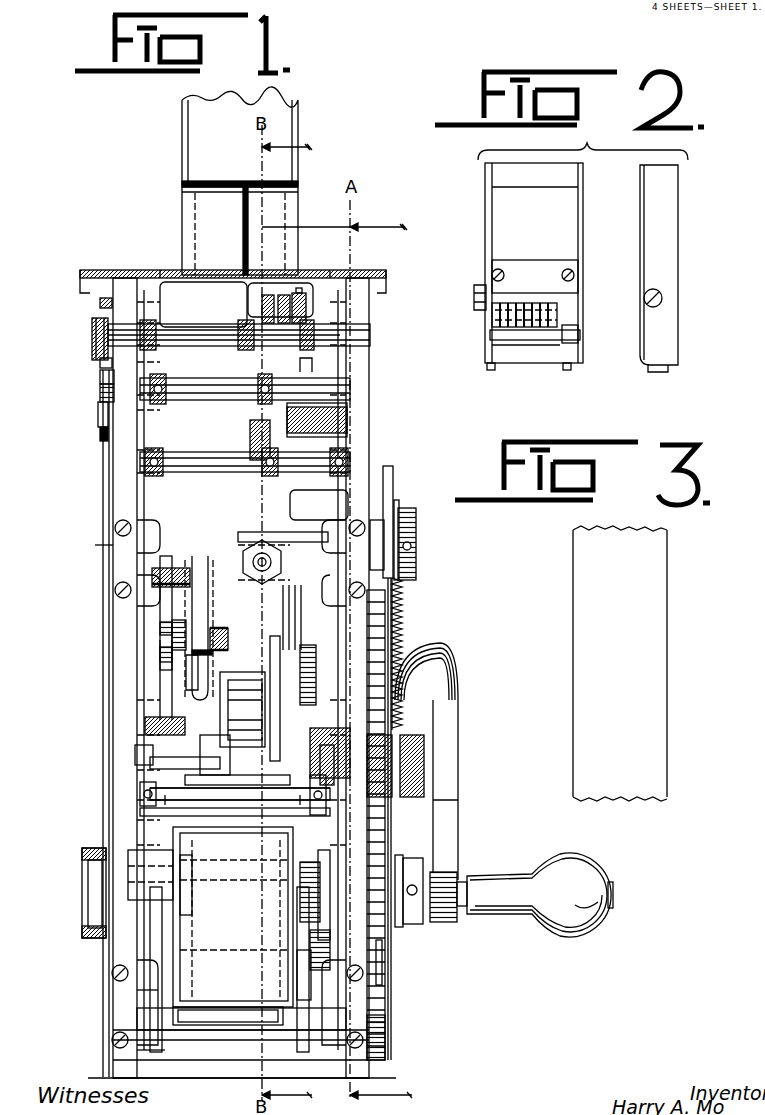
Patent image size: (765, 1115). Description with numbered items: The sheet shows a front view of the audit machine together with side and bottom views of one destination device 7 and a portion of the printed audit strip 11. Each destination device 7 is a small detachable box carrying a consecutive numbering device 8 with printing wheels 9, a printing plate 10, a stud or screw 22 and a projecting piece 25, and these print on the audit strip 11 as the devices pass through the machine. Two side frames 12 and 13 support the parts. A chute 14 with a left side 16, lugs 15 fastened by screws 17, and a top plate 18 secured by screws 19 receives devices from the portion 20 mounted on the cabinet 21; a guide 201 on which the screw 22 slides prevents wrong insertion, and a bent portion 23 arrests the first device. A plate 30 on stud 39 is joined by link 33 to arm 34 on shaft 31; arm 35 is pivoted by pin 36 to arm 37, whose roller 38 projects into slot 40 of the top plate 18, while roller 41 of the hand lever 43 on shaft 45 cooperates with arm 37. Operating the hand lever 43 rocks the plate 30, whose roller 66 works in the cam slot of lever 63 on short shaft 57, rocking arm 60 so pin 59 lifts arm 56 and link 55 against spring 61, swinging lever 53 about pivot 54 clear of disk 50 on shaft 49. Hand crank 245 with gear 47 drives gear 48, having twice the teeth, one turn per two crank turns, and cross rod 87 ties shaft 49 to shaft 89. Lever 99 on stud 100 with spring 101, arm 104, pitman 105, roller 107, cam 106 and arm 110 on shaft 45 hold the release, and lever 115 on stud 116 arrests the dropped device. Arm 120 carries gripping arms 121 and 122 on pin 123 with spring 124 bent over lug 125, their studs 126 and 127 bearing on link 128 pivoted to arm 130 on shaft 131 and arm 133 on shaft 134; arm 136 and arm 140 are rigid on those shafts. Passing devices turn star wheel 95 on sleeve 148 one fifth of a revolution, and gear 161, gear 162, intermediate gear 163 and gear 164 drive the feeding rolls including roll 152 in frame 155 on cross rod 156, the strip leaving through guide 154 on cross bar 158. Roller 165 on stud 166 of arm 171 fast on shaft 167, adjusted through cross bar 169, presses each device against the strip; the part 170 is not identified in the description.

In FIG. 2, the destination device 7 is at (553, 228).
In FIG. 2, the consecutive numbering device 8 is at (490, 316).
In FIG. 2, the printing wheels 9 is at (492, 324).
In FIG. 2, the printing plate 10 is at (573, 282).
In FIG. 3, the audit strip 11 is at (662, 678).
In FIG. 1, the side frame 12 is at (110, 665).
In FIG. 1, the side frame 13 is at (365, 305).
In FIG. 1, the chute 14 is at (205, 985).
In FIG. 1, the lugs 15 is at (105, 374).
In FIG. 1, the left hand side of chute 16 is at (192, 870).
In FIG. 1, the screws 17 is at (90, 875).
In FIG. 1, the top plate 18 is at (150, 815).
In FIG. 1, the screws 19 is at (162, 272).
In FIG. 1, the chute portion outside machine 20 is at (268, 200).
In FIG. 1, the cabinet 21 is at (365, 274).
In FIG. 2, the stud or screw 22 is at (478, 290).
In FIG. 1, the bent portion 23 is at (240, 536).
In FIG. 2, the projecting pieces 25 is at (568, 372).
In FIG. 1, the plate 30 is at (298, 356).
In FIG. 1, the shaft 31 is at (135, 752).
In FIG. 1, the link 33 is at (388, 606).
In FIG. 1, the arm 34 is at (288, 780).
In FIG. 1, the arm 35 is at (300, 272).
In FIG. 1, the pin 36 is at (292, 272).
In FIG. 1, the arm 37 is at (246, 306).
In FIG. 1, the roller 38 is at (243, 560).
In FIG. 1, the stud 39 is at (334, 446).
In FIG. 1, the slot 40 is at (248, 472).
In FIG. 1, the roller 41 is at (250, 432).
In FIG. 1, the hand lever 43 is at (243, 242).
In FIG. 1, the shaft 45 is at (186, 330).
In FIG. 1, the gear 47 is at (392, 650).
In FIG. 1, the gear 48 is at (385, 1025).
In FIG. 1, the shaft 49 is at (438, 920).
In FIG. 1, the disk 50 is at (402, 955).
In FIG. 1, the lever 53 is at (398, 938).
In FIG. 1, the pivot 54 is at (424, 772).
In FIG. 1, the link 55 is at (400, 690).
In FIG. 1, the arm 56 is at (390, 468).
In FIG. 1, the short shaft 57 is at (414, 548).
In FIG. 1, the pin 59 is at (397, 500).
In FIG. 1, the arm 60 is at (402, 508).
In FIG. 1, the spring 61 is at (397, 618).
In FIG. 1, the lever 63 is at (300, 522).
In FIG. 1, the roller 66 is at (305, 366).
In FIG. 1, the cross rod 87 is at (310, 966).
In FIG. 1, the shaft 89 is at (88, 900).
In FIG. 1, the star wheel 95 is at (270, 656).
In FIG. 1, the lever 99 is at (97, 410).
In FIG. 1, the stud 100 is at (98, 390).
In FIG. 1, the spring 101 is at (100, 303).
In FIG. 1, the arm 104 is at (98, 428).
In FIG. 1, the pitman 105 is at (102, 462).
In FIG. 1, the open cam 106 is at (86, 932).
In FIG. 1, the roller 107 is at (82, 853).
In FIG. 1, the arm 110 is at (98, 357).
In FIG. 1, the lever 115 is at (295, 340).
In FIG. 1, the stud 116 is at (366, 412).
In FIG. 1, the arm 120 is at (158, 612).
In FIG. 1, the upwardly extending arm 121 is at (210, 610).
In FIG. 1, the downwardly extending arm 122 is at (150, 763).
In FIG. 1, the pin 123 is at (170, 628).
In FIG. 1, the spring 124 is at (228, 630).
In FIG. 1, the lug 125 is at (195, 688).
In FIG. 1, the stud 126 is at (150, 574).
In FIG. 1, the stud 127 is at (145, 724).
In FIG. 1, the link 128 is at (160, 688).
In FIG. 1, the arm 130 is at (150, 333).
In FIG. 1, the shaft 131 is at (208, 386).
In FIG. 1, the arm 133 is at (148, 792).
In FIG. 1, the shaft 134 is at (240, 800).
In FIG. 1, the arm 136 is at (275, 275).
In FIG. 1, the downwardly extending arm 140 is at (322, 814).
In FIG. 1, the sleeve 148 is at (310, 680).
In FIG. 1, the feeding roll 152 is at (240, 945).
In FIG. 1, the guide 154 is at (228, 1040).
In FIG. 1, the frame 155 is at (150, 1002).
In FIG. 1, the cross rod 156 is at (112, 1046).
In FIG. 1, the cross bar 158 is at (108, 990).
In FIG. 1, the gear 161 is at (300, 600).
In FIG. 1, the second gear 162 is at (330, 745).
In FIG. 1, the intermediate gear 163 is at (310, 872).
In FIG. 1, the gear 164 is at (300, 950).
In FIG. 1, the roller 165 is at (230, 752).
In FIG. 1, the stud 166 is at (228, 698).
In FIG. 1, the shaft 167 is at (205, 472).
In FIG. 1, the cross bar 169 is at (108, 548).
In FIG. 1, the roller 170 is at (272, 570).
In FIG. 1, the arm 171 is at (380, 955).
In FIG. 1, the guide 201 is at (290, 113).
In FIG. 1, the hand crank 245 is at (440, 827).